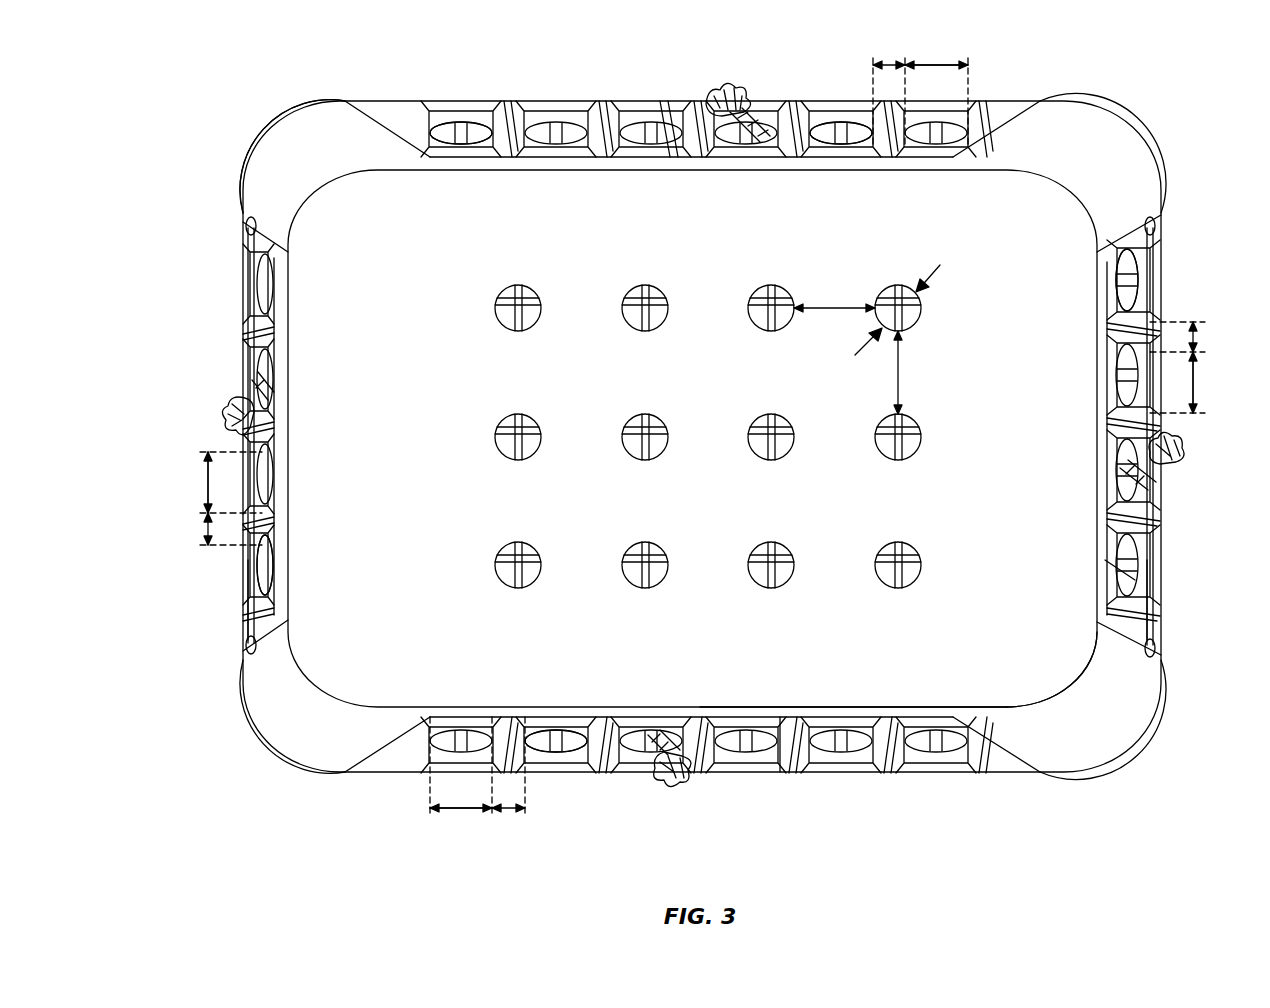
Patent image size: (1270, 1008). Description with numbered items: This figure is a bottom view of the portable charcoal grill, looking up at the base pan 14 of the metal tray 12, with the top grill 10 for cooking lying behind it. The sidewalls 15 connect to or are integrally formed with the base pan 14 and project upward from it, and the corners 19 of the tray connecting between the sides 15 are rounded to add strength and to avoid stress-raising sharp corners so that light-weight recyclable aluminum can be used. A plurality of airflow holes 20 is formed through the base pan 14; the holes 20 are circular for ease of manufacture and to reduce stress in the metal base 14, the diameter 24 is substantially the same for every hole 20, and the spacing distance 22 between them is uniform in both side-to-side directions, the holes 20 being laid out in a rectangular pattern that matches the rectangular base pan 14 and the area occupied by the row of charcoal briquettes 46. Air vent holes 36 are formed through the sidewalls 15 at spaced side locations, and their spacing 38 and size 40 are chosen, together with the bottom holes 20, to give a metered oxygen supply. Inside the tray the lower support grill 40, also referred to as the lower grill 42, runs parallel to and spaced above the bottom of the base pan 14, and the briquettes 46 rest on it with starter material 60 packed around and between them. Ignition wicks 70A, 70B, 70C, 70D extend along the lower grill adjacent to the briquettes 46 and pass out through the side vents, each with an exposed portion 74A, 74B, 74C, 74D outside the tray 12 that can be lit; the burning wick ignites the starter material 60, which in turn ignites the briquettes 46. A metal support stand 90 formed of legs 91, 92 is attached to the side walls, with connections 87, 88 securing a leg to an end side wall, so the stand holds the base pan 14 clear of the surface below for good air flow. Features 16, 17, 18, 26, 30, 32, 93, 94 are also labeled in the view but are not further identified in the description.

The top grill 10 is at (690, 496).
The metal tray 12 is at (784, 765).
The base pan 14 is at (865, 665).
The sidewalls 15 is at (618, 101).
The side frame 16 is at (1132, 535).
The slot 17 is at (700, 762).
The edge rib 18 is at (672, 101).
The corners 19 is at (287, 150).
The airflow holes 20 is at (918, 448).
The spacing 22 is at (835, 305).
The diameter 24 is at (940, 265).
The outer flange 26 is at (548, 101).
The floor 30 is at (838, 693).
The opening 32 is at (1125, 575).
The air vent holes 36 is at (847, 112).
The spacing 38 is at (888, 64).
The lower support grill 40 is at (935, 64).
The lower support grill 42 is at (658, 556).
The charcoal briquettes 46 is at (545, 548).
The starter material 60 is at (508, 437).
The ignition wick 70A is at (1145, 480).
The ignition wick 70B is at (262, 385).
The ignition wick 70C is at (625, 762).
The ignition wick 70D is at (780, 112).
The exposed portion 74A is at (1170, 455).
The exposed portion 74B is at (240, 418).
The exposed portion 74C is at (675, 784).
The exposed portion 74D is at (720, 98).
The connection 87 is at (1152, 228).
The connection 88 is at (1157, 650).
The metal support stand 90 is at (1175, 437).
The leg 91 is at (1150, 595).
The leg 92 is at (258, 612).
The rod end 93 is at (253, 228).
The rod end 94 is at (255, 650).